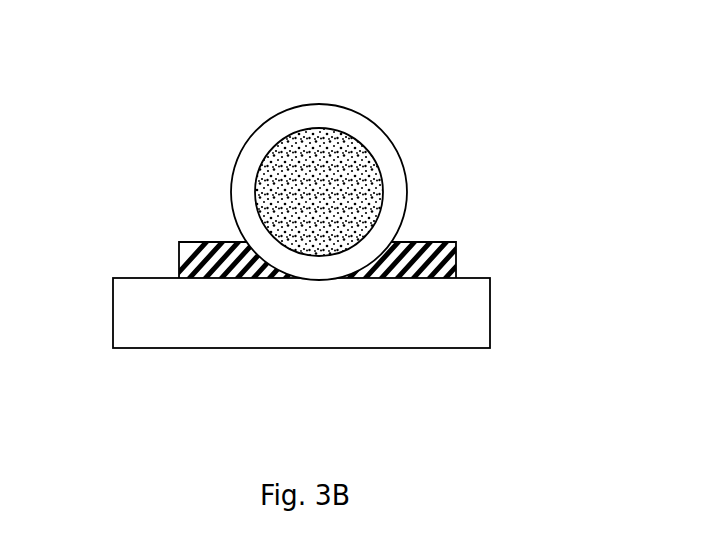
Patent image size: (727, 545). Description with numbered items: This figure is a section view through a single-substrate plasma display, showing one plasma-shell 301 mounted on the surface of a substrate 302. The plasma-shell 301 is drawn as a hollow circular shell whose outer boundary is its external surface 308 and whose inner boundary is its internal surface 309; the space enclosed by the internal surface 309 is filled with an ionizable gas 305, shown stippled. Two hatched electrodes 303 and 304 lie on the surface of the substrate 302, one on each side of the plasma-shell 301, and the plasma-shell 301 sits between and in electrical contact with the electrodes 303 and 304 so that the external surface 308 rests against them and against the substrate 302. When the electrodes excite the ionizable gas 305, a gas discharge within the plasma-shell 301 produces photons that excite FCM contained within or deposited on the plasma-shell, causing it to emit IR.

The plasma-shell 301 is at (315, 221).
The substrate 302 is at (158, 349).
The electrode 303 is at (457, 243).
The electrode 304 is at (180, 243).
The ionizable gas 305 is at (341, 185).
The external surface 308 is at (306, 104).
The internal surface 309 is at (305, 258).